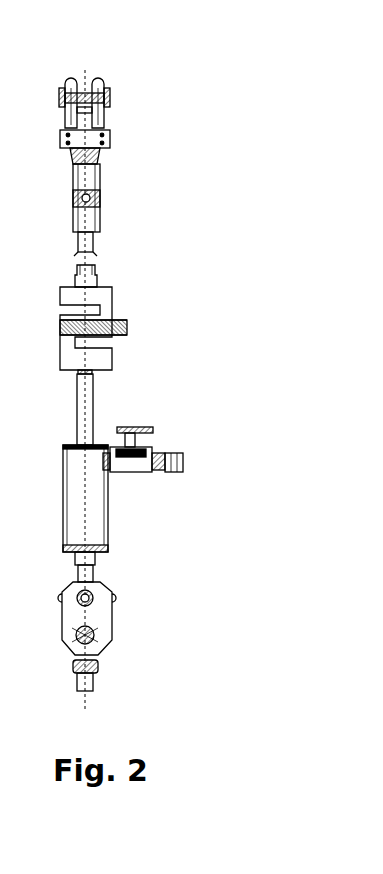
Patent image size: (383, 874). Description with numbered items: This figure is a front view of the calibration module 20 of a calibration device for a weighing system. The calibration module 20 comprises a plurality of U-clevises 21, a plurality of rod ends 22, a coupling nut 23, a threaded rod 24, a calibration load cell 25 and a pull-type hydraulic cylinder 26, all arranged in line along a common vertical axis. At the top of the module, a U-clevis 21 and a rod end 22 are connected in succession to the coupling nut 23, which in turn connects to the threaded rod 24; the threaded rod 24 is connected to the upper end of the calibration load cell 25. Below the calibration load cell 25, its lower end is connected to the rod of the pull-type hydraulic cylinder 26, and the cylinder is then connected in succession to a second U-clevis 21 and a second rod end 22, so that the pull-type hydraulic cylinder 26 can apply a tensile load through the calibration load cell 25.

The calibration module 20 is at (245, 108).
The U-clevis 21 is at (95, 120).
The rod end 22 is at (103, 153).
The coupling nut 23 is at (92, 208).
The threaded rod 24 is at (88, 250).
The calibration load cell 25 is at (83, 300).
The pull-type hydraulic cylinder 26 is at (83, 495).